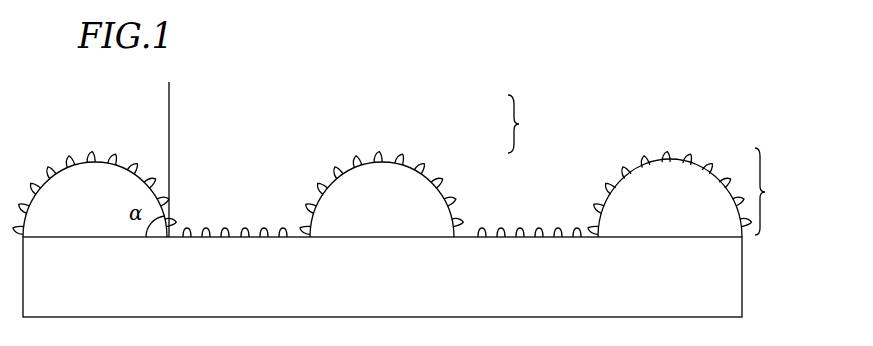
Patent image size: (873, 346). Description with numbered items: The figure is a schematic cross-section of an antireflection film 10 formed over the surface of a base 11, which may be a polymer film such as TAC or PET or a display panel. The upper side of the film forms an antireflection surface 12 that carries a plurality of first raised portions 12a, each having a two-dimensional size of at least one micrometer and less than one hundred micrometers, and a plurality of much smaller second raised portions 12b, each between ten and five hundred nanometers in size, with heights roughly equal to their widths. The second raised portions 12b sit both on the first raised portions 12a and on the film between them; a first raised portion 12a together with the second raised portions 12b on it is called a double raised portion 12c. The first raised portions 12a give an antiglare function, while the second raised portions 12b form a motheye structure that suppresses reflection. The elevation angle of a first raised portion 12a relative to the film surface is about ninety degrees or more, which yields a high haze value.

The antireflection film 10 is at (691, 140).
The base 11 is at (728, 277).
The antireflection surface 12 is at (717, 113).
The first raised portion 12a is at (413, 197).
The second raised portion 12b is at (413, 160).
The double raised portion 12c is at (441, 166).